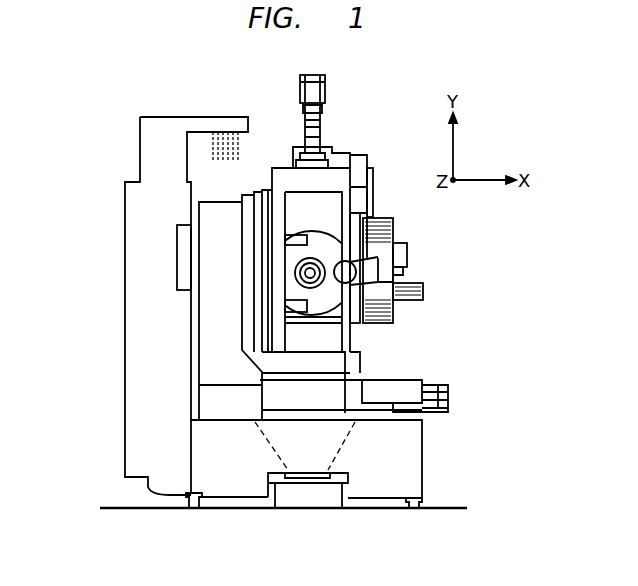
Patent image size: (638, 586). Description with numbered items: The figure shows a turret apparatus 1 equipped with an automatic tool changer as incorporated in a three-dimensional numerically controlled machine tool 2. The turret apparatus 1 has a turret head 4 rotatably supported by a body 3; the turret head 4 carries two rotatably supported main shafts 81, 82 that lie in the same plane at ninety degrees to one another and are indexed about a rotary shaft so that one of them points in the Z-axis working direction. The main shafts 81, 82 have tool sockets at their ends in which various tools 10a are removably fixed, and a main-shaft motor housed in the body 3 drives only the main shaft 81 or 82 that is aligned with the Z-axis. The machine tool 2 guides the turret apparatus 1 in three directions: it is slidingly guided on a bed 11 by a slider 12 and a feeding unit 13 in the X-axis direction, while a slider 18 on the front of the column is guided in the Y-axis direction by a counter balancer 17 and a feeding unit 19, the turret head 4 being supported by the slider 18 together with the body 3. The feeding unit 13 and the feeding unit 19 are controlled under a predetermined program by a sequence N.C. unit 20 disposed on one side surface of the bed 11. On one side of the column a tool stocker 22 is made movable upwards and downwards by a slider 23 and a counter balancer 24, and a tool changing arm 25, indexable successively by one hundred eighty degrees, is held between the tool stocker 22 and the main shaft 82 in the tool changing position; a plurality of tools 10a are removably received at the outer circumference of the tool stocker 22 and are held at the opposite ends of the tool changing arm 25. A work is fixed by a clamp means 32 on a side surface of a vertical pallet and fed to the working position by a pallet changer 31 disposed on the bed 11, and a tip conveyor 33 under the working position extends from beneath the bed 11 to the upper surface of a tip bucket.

The turret apparatus 1 is at (434, 239).
The machine tool 2 is at (464, 380).
The body 3 is at (313, 190).
The turret head 4 is at (325, 237).
The tools 10a is at (408, 272).
The bed 11 is at (422, 458).
The slider 12 is at (342, 380).
The feeding unit 13 is at (449, 400).
The counter balancer 17 is at (316, 119).
The slider 18 is at (343, 172).
The feeding unit 19 is at (302, 92).
The sequence N.C. unit 20 is at (130, 228).
The tool stocker 22 is at (378, 324).
The slider 23 is at (357, 320).
The counter balancer 24 is at (370, 188).
The tool changing arm 25 is at (423, 293).
The pallet changer 31 is at (218, 210).
The clamp means 32 is at (294, 234).
The tip conveyor 33 is at (312, 503).
The main shaft 81 is at (313, 288).
The main shaft 82 is at (376, 254).